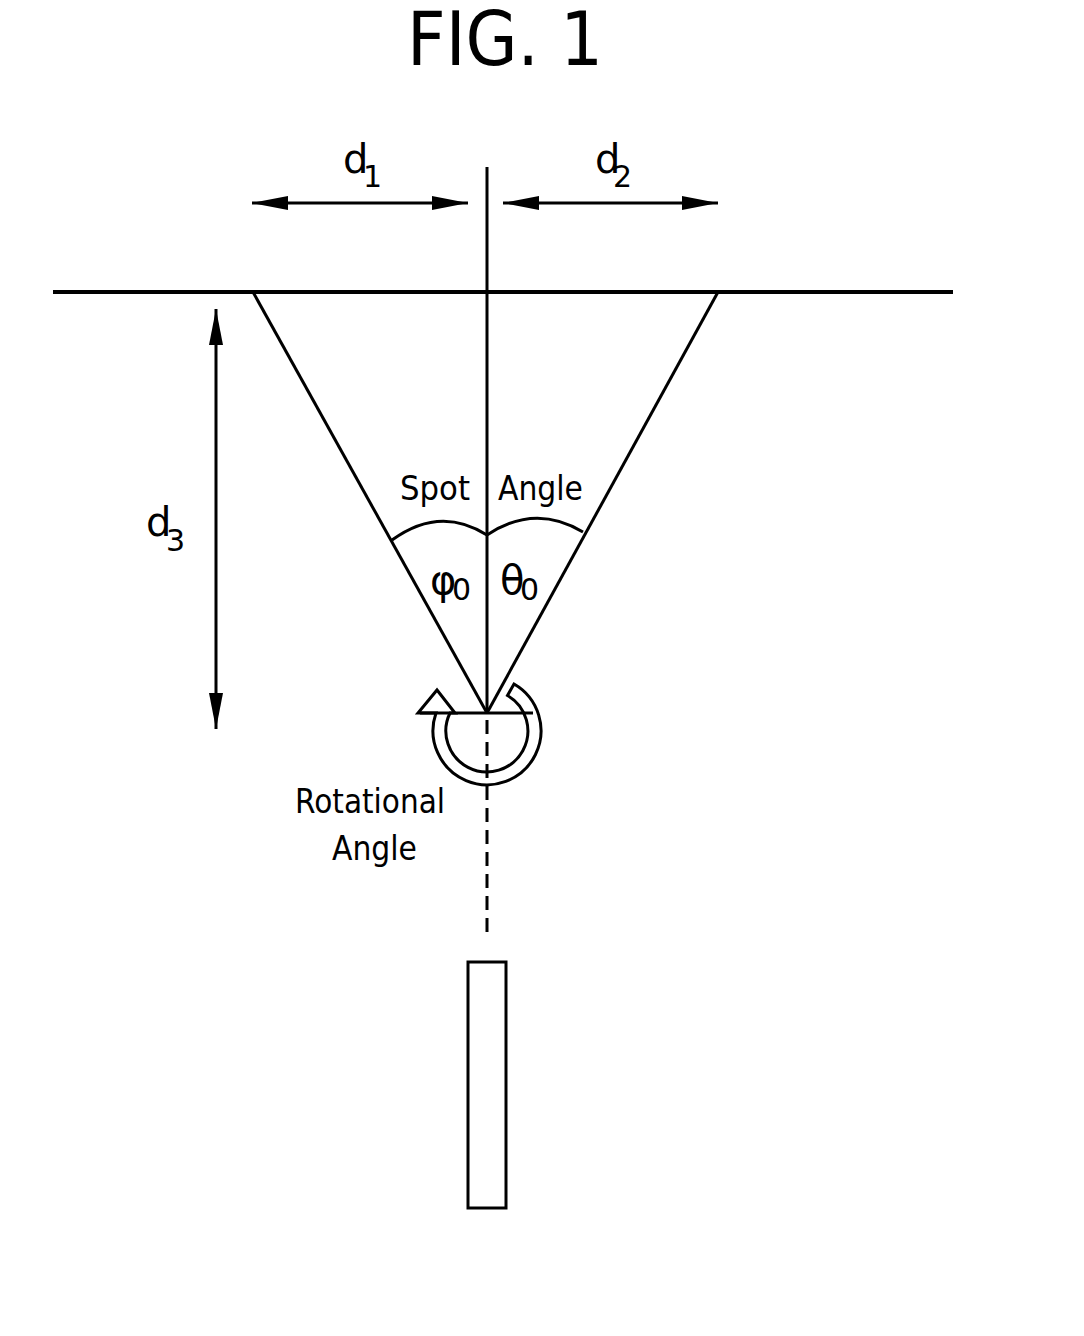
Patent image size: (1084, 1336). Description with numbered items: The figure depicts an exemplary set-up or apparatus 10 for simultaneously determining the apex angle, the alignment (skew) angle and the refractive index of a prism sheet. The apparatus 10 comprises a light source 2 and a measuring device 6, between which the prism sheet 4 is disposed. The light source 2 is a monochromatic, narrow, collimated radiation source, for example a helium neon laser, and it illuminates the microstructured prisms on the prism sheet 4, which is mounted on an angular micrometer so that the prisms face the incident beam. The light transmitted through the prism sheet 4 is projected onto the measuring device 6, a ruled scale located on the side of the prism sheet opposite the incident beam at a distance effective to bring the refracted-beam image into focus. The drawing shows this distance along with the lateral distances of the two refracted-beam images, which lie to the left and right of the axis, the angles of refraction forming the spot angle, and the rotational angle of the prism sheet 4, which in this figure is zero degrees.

The light source 2 is at (498, 716).
The prism sheet 4 is at (468, 1076).
The measuring device 6 is at (786, 290).
The apparatus 10 is at (712, 558).